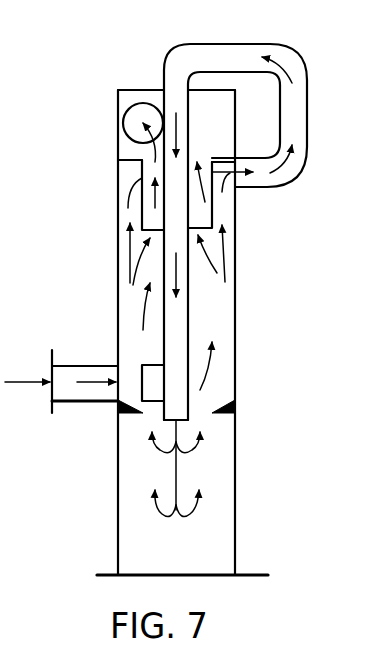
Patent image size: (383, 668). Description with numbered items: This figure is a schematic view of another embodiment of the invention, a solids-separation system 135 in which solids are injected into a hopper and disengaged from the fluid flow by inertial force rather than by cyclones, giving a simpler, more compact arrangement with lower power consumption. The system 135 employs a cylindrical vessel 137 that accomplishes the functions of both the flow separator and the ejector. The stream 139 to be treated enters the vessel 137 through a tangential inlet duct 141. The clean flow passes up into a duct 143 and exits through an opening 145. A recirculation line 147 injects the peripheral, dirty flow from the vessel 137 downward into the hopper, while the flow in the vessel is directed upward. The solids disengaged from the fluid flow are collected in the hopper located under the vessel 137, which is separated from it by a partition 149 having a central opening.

The system 135 is at (86, 517).
The cylindrical vessel 137 is at (127, 330).
The stream 139 is at (18, 384).
The tangential inlet duct 141 is at (82, 370).
The duct 143 is at (208, 233).
The opening 145 is at (125, 130).
The recirculation line 147 is at (257, 180).
The partition 149 is at (245, 400).